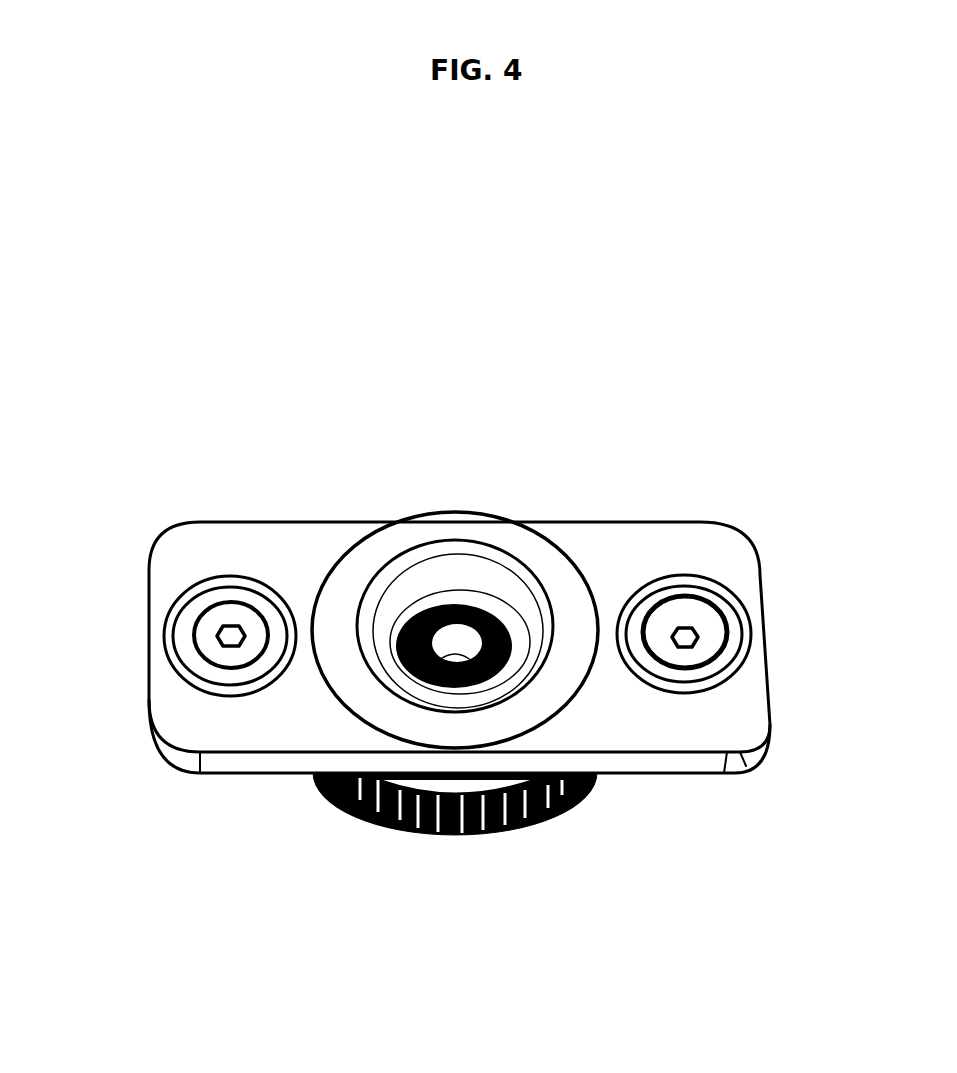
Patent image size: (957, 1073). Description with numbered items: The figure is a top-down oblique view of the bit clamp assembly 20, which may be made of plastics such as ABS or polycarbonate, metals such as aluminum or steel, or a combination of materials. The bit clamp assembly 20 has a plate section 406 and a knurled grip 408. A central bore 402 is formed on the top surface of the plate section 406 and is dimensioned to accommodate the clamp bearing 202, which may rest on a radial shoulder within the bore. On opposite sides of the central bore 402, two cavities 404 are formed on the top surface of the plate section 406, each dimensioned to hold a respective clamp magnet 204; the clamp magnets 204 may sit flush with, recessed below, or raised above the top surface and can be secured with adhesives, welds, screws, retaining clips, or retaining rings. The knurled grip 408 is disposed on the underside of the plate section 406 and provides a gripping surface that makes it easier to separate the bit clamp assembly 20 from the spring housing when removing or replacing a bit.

The bit clamp assembly 20 is at (455, 272).
The clamp bearing 202 is at (455, 610).
The clamp magnets 204 is at (236, 617).
The central bore 402 is at (503, 573).
The cavities 404 is at (185, 592).
The plate section 406 is at (753, 705).
The knurled grip 408 is at (452, 827).